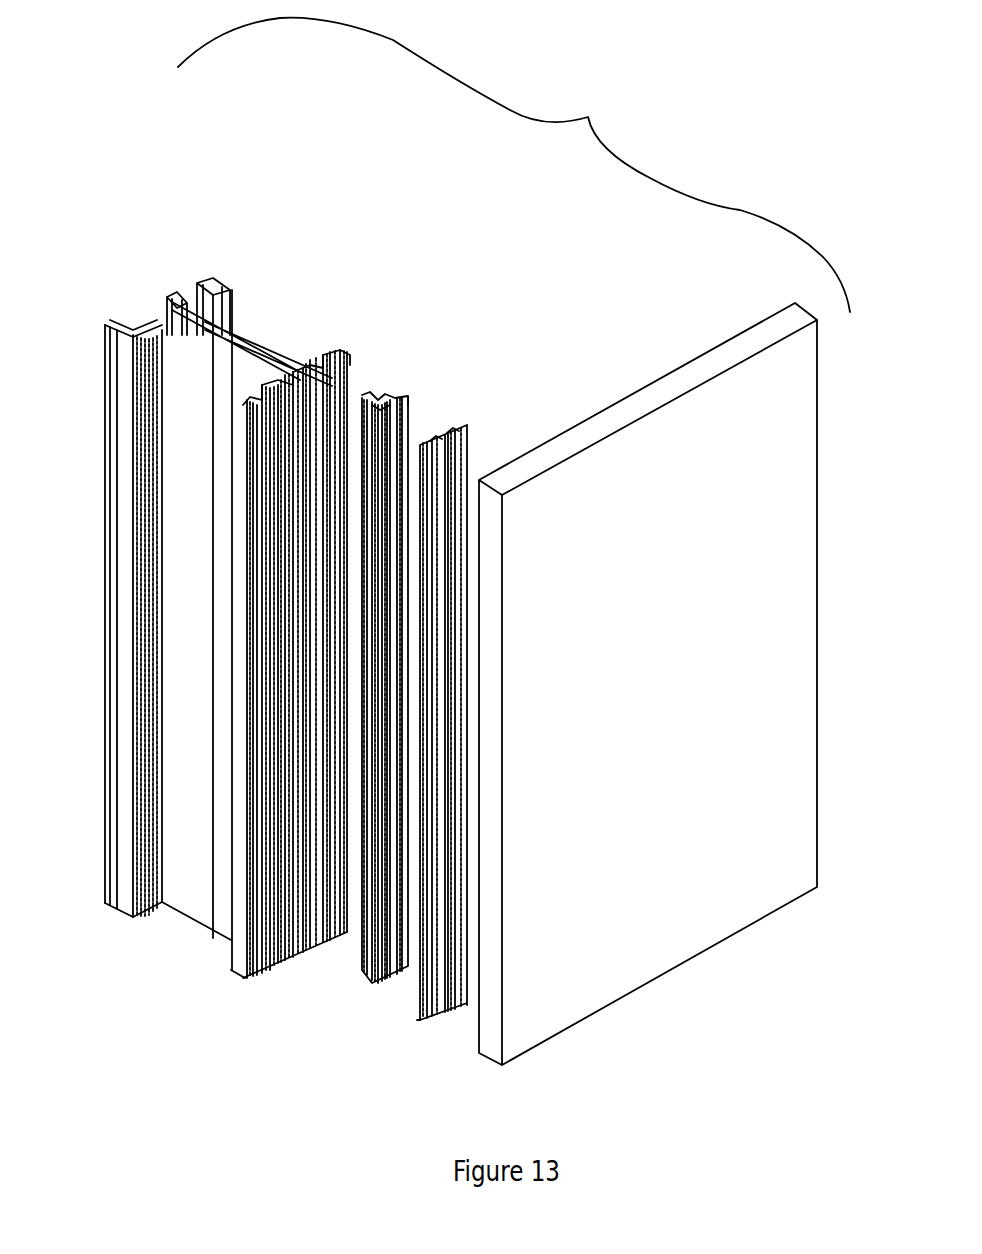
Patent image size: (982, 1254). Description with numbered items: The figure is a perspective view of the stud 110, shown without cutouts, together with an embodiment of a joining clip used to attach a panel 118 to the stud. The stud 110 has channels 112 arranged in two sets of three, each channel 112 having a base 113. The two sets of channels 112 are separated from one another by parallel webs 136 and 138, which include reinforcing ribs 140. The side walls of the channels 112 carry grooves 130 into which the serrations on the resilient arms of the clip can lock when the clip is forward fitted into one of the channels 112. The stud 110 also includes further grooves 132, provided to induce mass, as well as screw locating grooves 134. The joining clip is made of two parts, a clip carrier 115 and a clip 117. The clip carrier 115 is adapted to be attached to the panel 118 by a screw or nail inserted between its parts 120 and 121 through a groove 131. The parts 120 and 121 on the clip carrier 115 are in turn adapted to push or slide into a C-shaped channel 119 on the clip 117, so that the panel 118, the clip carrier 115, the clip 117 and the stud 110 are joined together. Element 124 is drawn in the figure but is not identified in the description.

The stud 110 is at (313, 152).
The channel 112 is at (193, 293).
The base 113 is at (207, 287).
The clip carrier 115 is at (419, 1043).
The clip 117 is at (347, 997).
The panel 118 is at (695, 957).
The C-shaped channel 119 is at (389, 396).
The part 120 is at (436, 432).
The part 121 is at (453, 425).
The panel 124 is at (357, 958).
The groove 130 is at (253, 982).
The groove 131 is at (443, 962).
The groove 132 is at (140, 712).
The screw locating groove 134 is at (275, 380).
The web 136 is at (213, 340).
The web 138 is at (213, 431).
The reinforcing rib 140 is at (218, 352).